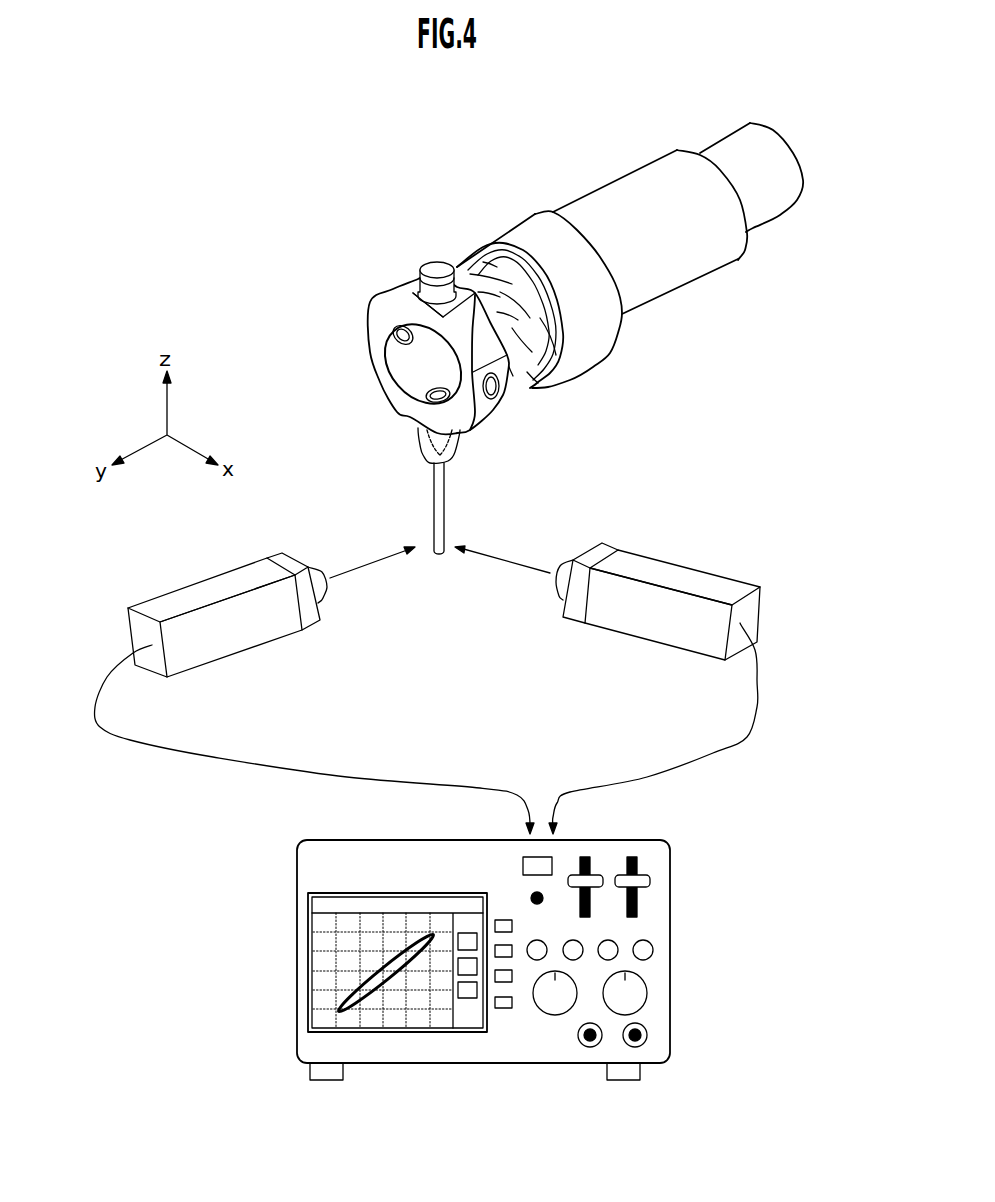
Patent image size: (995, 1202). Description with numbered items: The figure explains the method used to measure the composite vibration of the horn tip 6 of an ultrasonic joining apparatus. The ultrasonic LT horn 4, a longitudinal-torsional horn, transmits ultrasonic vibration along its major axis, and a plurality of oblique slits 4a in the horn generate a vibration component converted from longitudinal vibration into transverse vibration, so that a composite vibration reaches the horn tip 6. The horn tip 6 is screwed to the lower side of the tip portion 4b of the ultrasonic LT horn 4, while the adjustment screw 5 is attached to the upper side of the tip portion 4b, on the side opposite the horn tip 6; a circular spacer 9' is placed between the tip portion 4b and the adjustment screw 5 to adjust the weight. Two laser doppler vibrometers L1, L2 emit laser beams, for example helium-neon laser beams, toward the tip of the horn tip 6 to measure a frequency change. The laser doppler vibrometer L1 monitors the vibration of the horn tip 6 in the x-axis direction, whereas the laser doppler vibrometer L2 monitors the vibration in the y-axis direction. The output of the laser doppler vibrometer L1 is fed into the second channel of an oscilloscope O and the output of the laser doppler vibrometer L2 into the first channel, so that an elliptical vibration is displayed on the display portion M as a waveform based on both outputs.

The ultrasonic LT horn 4 is at (613, 179).
The oblique slits 4a is at (533, 390).
The tip portion 4b is at (373, 381).
The adjustment screw 5 is at (432, 268).
The circular spacer 9' is at (399, 284).
The horn tip 6 is at (423, 482).
The laser doppler vibrometer L1 is at (690, 577).
The laser doppler vibrometer L2 is at (220, 583).
The display portion M is at (405, 892).
The oscilloscope O is at (491, 934).